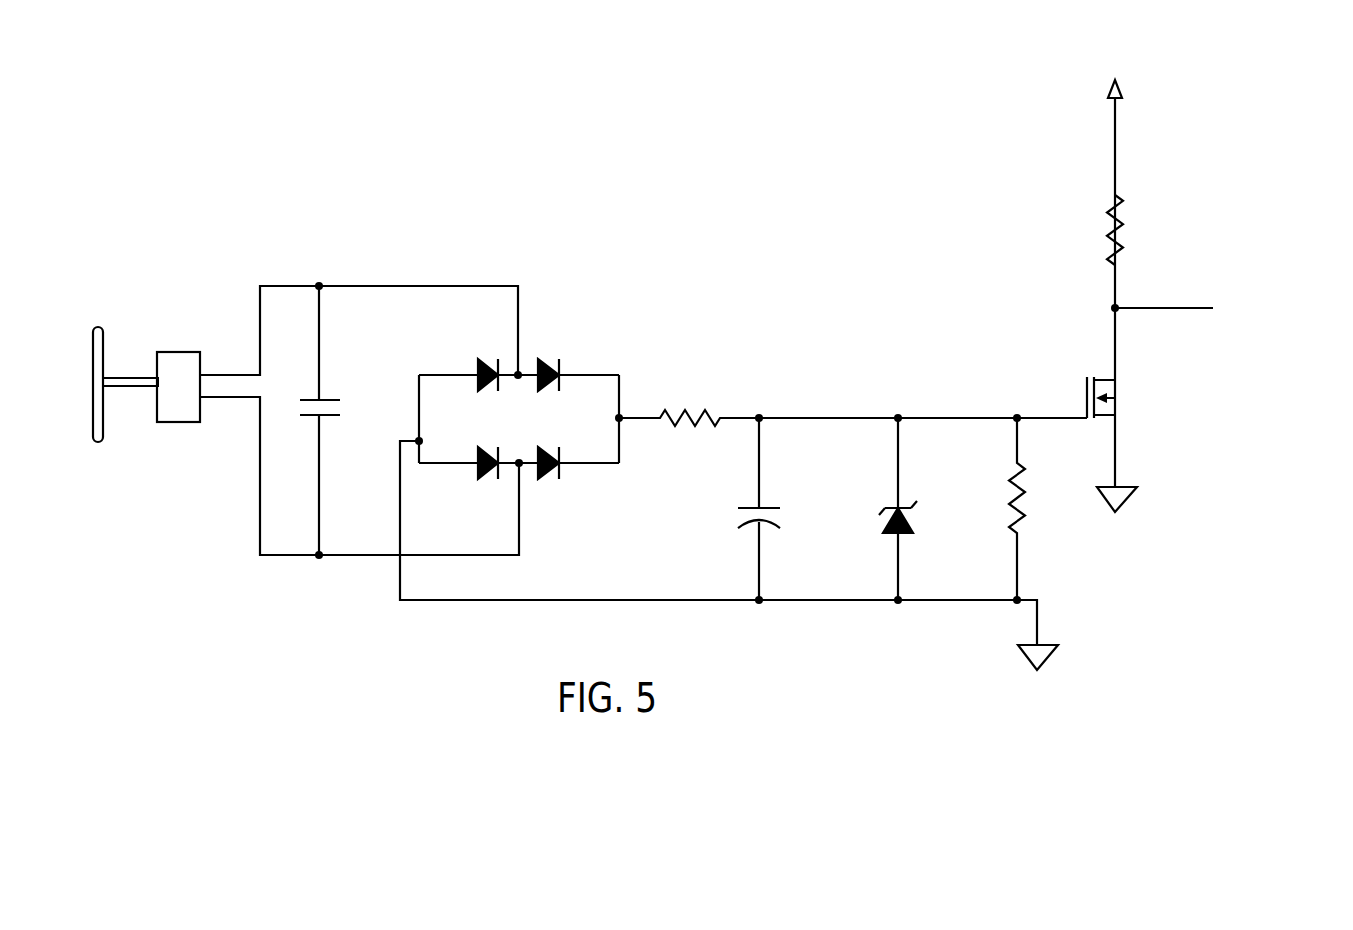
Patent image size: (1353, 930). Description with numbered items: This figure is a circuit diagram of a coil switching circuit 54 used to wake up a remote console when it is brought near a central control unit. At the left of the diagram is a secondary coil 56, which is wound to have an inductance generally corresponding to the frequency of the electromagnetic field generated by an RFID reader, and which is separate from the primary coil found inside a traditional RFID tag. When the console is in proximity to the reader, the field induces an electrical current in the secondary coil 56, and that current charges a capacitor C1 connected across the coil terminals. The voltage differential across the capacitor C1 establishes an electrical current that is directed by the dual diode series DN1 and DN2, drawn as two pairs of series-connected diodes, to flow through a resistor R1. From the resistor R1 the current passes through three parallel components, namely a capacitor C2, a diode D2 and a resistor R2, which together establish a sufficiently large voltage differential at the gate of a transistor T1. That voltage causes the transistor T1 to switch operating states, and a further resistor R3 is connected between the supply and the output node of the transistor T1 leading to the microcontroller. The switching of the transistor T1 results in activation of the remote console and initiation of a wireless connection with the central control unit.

The coil switching circuit 54 is at (377, 230).
The secondary coil 56 is at (91, 421).
The capacitor C1 is at (341, 420).
The capacitor C2 is at (780, 509).
The resistor R1 is at (853, 397).
The resistor R2 is at (1034, 509).
The resistor R3 is at (1132, 230).
The diode D2 is at (916, 509).
The transistor T1 is at (1086, 391).
The dual diode series DN1 is at (557, 490).
The dual diode series DN2 is at (555, 352).